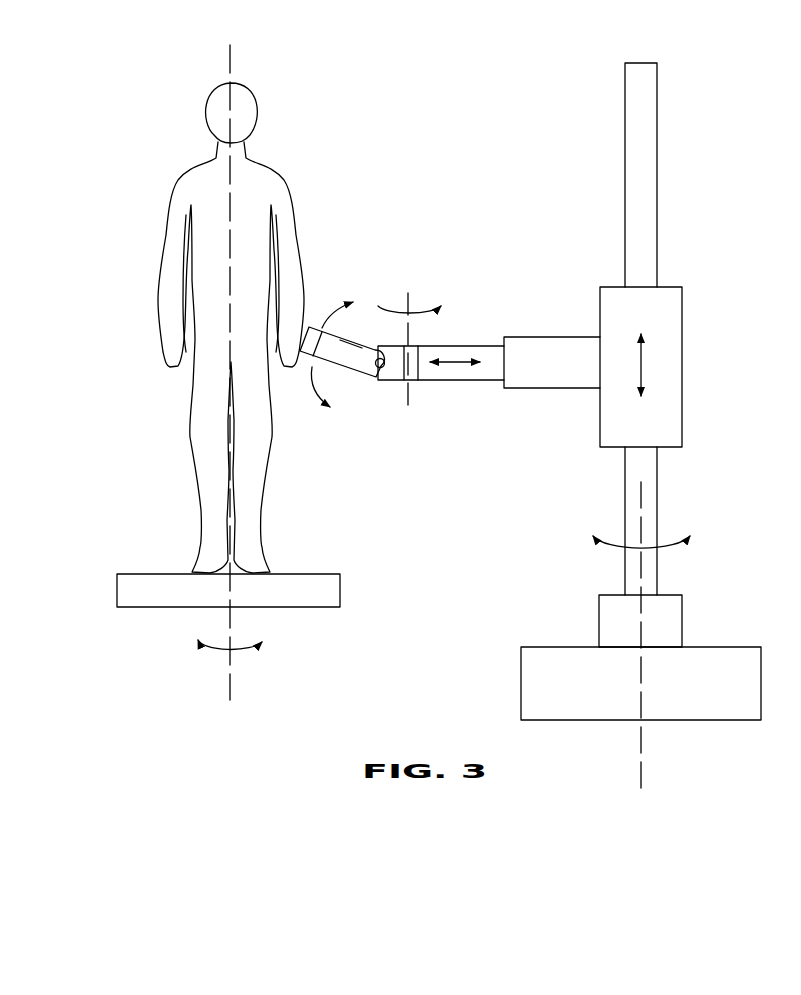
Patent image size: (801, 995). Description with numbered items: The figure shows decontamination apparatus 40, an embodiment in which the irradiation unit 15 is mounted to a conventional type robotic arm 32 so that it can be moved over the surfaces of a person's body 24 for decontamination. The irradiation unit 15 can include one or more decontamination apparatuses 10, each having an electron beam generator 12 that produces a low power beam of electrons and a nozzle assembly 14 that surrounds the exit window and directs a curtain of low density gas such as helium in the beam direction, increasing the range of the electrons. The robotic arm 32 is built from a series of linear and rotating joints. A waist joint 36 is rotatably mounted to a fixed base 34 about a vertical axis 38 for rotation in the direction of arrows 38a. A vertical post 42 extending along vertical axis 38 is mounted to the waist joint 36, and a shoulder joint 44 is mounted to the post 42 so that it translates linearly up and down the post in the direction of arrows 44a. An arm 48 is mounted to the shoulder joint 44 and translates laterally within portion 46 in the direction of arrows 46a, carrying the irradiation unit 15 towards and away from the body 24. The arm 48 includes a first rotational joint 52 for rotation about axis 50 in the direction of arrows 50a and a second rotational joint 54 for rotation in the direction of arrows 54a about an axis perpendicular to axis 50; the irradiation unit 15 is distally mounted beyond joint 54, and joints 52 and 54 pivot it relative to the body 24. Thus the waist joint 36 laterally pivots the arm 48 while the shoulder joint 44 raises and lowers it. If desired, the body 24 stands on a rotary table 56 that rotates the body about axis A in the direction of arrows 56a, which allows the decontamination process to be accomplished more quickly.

The electron beam irradiation or decontamination apparatus 10 is at (349, 342).
The electron beam generator 12 is at (357, 358).
The nozzle assembly 14 is at (312, 328).
The irradiation unit 15 is at (388, 232).
The person's body 24 is at (172, 233).
The axis A is at (232, 104).
The robotic arm 32 is at (668, 122).
The fixed base 34 is at (737, 720).
The waist joint 36 is at (672, 608).
The vertical axis 38 is at (642, 688).
The arrows 38a is at (600, 560).
The decontamination apparatus 40 is at (498, 88).
The vertical post 42 is at (658, 482).
The shoulder joint 44 is at (685, 328).
The arrows 44a is at (643, 367).
The portion 46 is at (555, 337).
The arrows 46a is at (462, 363).
The arm 48 is at (482, 345).
The axis 50 is at (410, 318).
The arrows 50a is at (442, 313).
The first rotational joint 52 is at (423, 380).
The second rotational joint 54 is at (380, 368).
The arrows 54a is at (312, 367).
The rotary table 56 is at (283, 608).
The arrows 56a is at (212, 662).